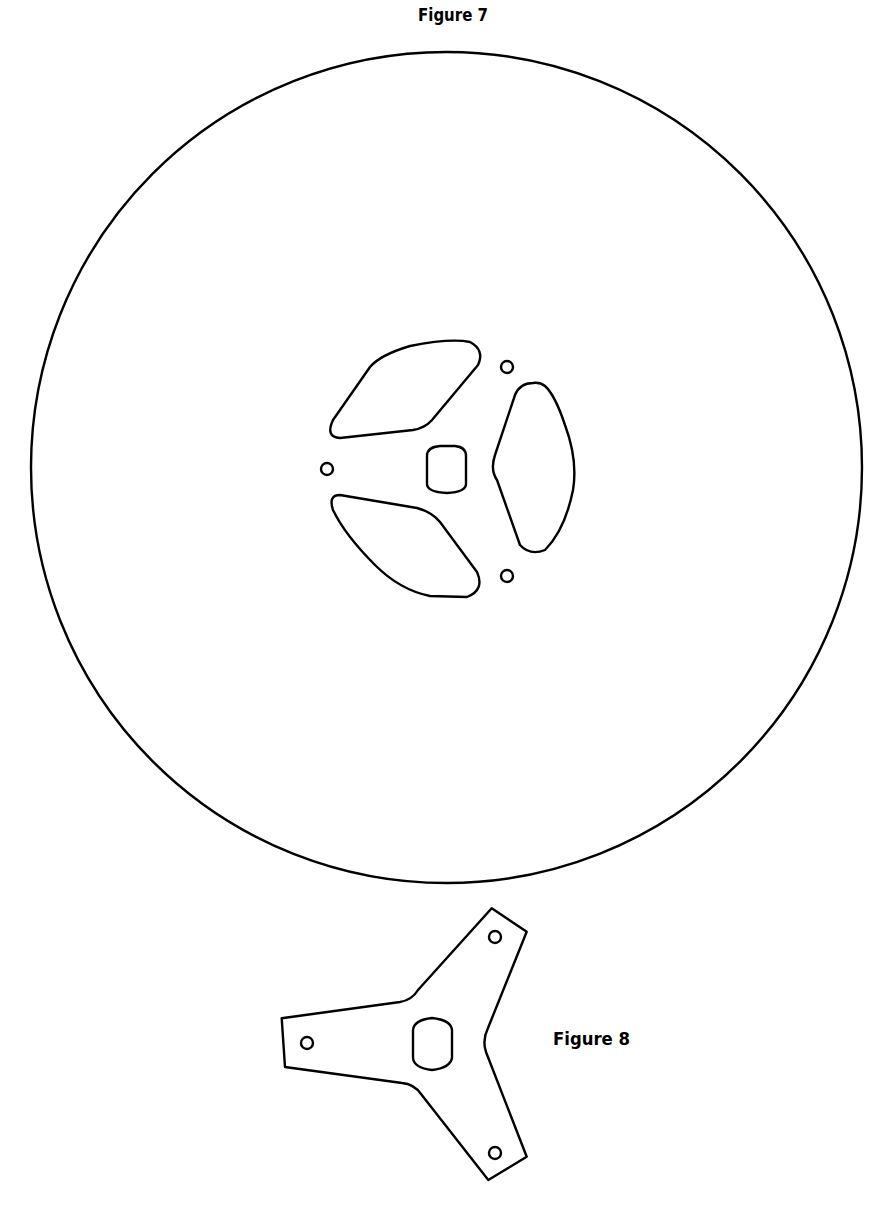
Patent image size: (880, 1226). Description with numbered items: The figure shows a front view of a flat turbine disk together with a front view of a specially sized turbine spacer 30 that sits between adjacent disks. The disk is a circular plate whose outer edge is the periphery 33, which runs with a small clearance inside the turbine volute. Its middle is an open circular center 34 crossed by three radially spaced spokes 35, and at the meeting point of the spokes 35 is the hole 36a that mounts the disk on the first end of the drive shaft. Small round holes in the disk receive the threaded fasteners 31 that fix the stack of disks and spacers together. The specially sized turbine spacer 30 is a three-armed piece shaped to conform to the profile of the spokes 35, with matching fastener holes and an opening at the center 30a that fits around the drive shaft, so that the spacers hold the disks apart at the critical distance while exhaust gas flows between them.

In FIG. 7, the periphery 33 is at (57, 570).
In FIG. 7, the threaded fasteners 31 is at (513, 363).
In FIG. 7, the open circular center 34 is at (367, 387).
In FIG. 7, the radially spaced spokes 35 is at (475, 535).
In FIG. 7, the hole 36a is at (450, 475).
In FIG. 8, the specially sized turbine spacer 30 is at (350, 1057).
In FIG. 8, the opening at the center 30a is at (442, 1053).